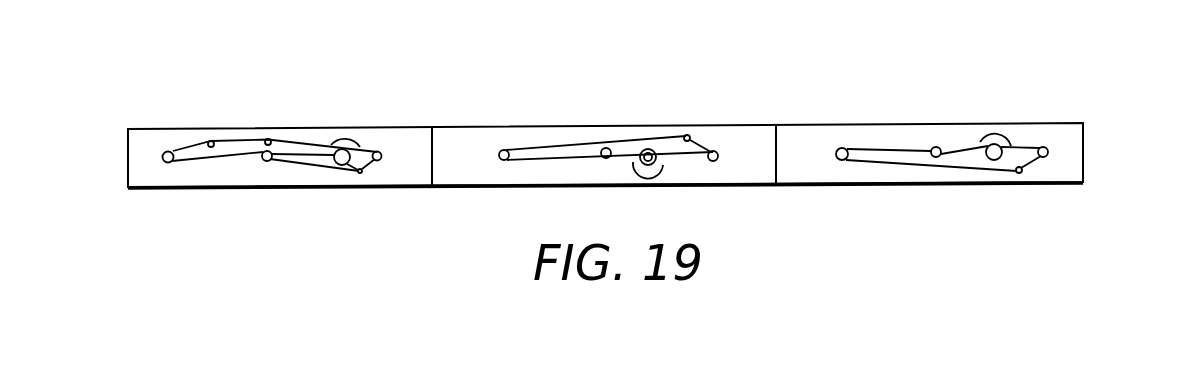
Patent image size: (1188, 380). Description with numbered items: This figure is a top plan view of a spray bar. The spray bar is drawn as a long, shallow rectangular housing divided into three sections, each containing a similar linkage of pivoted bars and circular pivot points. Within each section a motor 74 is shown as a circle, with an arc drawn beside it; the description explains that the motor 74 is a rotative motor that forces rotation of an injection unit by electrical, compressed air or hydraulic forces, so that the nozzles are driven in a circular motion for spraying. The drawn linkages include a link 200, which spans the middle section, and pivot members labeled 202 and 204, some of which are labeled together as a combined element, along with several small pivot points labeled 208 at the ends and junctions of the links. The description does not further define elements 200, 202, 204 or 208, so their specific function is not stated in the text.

The link bar 200 is at (555, 146).
The pivot / link member 202 is at (169, 154).
The pivot / link member 204 is at (178, 150).
The pivot pin 208 is at (270, 141).
The rotative motor 74 is at (337, 165).